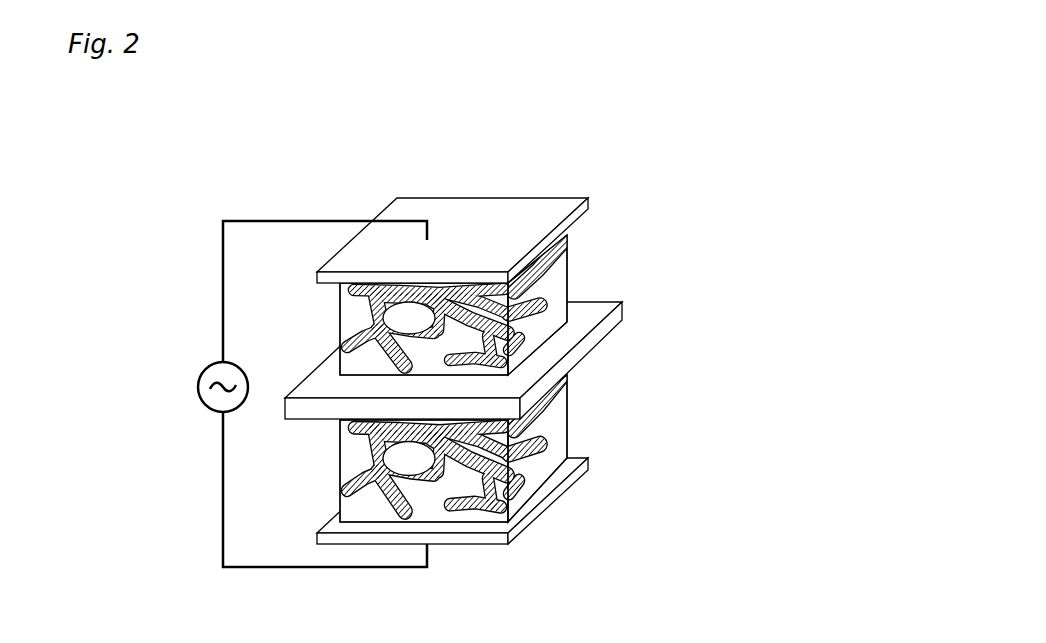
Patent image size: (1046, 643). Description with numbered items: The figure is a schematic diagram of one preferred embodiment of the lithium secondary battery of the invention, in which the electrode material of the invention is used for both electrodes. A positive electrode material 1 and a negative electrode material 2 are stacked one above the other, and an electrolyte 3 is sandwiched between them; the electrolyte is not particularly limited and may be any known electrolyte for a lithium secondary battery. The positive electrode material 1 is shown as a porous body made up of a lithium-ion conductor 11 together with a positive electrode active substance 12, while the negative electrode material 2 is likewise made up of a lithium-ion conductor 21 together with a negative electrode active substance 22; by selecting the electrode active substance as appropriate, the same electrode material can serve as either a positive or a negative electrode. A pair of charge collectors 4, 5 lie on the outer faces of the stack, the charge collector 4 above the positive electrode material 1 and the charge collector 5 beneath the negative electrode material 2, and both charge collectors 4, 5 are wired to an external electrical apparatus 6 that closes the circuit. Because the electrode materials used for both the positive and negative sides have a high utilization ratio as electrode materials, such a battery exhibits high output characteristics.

The positive electrode material 1 is at (530, 297).
The lithium-ion conductor 11 is at (543, 302).
The positive electrode active substance 12 is at (557, 273).
The negative electrode material 2 is at (530, 444).
The lithium-ion conductor 21 is at (543, 450).
The negative electrode active substance 22 is at (557, 420).
The electrolyte 3 is at (618, 317).
The charge collector 4 is at (562, 204).
The charge collector 5 is at (582, 473).
The external electrical apparatus 6 is at (202, 368).